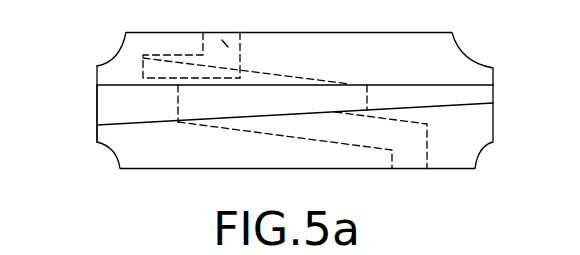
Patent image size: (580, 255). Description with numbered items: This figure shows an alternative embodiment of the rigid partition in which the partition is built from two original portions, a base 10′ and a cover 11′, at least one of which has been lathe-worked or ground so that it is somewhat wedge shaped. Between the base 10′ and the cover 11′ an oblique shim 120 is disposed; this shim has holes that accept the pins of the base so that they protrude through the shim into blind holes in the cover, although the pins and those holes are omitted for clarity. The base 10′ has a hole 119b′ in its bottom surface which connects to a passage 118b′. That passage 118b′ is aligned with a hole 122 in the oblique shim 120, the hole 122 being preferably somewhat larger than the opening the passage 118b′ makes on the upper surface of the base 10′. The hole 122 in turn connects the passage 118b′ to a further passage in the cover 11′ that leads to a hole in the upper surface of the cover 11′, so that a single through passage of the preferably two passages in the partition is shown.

The base 10′ is at (494, 144).
The cover 11′ is at (495, 64).
The oblique shim 120 is at (97, 117).
The hole 122 is at (228, 107).
The passage 118b′ is at (328, 133).
The hole 119b′ is at (408, 162).